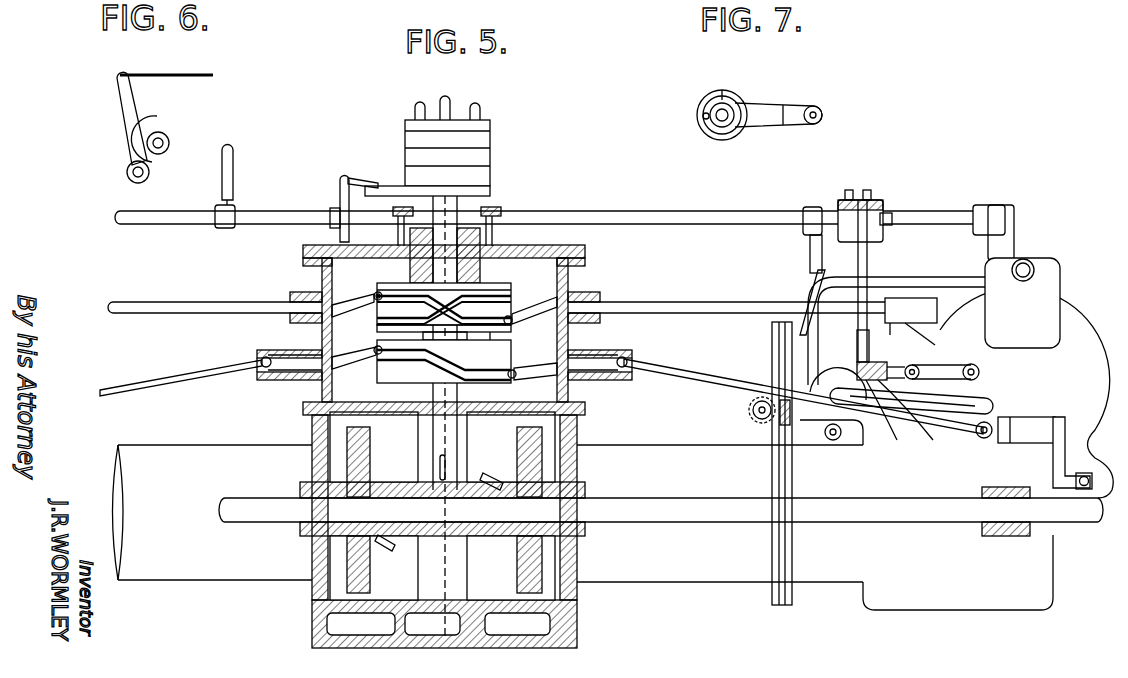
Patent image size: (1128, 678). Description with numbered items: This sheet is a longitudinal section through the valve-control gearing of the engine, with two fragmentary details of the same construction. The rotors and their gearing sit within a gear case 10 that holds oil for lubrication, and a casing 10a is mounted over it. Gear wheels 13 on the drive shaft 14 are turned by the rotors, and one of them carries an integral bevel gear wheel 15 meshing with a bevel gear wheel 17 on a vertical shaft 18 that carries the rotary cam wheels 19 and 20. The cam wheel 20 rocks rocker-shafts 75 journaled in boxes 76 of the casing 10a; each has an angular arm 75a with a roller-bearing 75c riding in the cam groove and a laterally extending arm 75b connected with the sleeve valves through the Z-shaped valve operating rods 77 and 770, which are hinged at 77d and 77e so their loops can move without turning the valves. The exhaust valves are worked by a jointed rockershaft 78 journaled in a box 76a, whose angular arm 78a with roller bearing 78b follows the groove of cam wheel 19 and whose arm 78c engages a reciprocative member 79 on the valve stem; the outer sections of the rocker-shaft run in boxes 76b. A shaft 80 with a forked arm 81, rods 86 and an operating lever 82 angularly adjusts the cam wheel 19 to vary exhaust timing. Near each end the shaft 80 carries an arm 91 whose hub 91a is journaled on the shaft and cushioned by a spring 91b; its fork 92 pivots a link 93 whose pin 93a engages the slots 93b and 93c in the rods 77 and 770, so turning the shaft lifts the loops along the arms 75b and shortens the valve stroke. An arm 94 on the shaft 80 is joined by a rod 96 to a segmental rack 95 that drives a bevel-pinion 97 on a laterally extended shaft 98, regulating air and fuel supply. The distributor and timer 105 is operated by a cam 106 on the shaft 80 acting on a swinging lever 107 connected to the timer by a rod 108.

In FIG. 5, the gear case 10 is at (562, 626).
In FIG. 5, the casing 10a is at (575, 263).
In FIG. 5, the gear wheels 13 is at (370, 570).
In FIG. 5, the drive shaft 14 is at (490, 213).
In FIG. 5, the bevel gear wheel 15 is at (394, 546).
In FIG. 5, the bevel gear wheel 17 is at (488, 477).
In FIG. 5, the vertical shaft 18 is at (447, 482).
In FIG. 5, the cam wheel 19 is at (512, 358).
In FIG. 5, the cam wheel 20 is at (504, 288).
In FIG. 5, the rocker-shafts 75 is at (218, 302).
In FIG. 5, the angular arm 75a is at (359, 300).
In FIG. 5, the laterally extending arm 75b is at (383, 290).
In FIG. 5, the roller-bearing 75c is at (493, 332).
In FIG. 5, the boxes 76 is at (300, 292).
In FIG. 5, the box 76a is at (300, 382).
In FIG. 5, the boxes 76b is at (1046, 422).
In FIG. 5, the valve operating rod 77 is at (893, 422).
In FIG. 5, the valve operating rod 770 is at (925, 422).
In FIG. 5, the hinge 77d is at (980, 371).
In FIG. 5, the pivot 77e is at (985, 379).
In FIG. 5, the rockershaft 78 is at (226, 374).
In FIG. 5, the angular arm 78a is at (352, 372).
In FIG. 5, the roller bearing 78b is at (374, 355).
In FIG. 5, the arm 78c is at (1053, 467).
In FIG. 5, the reciprocative member 79 is at (1082, 490).
In FIG. 6, the shaft 80 is at (170, 143).
In FIG. 7, the shaft 80 is at (736, 109).
In FIG. 5, the shaft 80 is at (638, 211).
In FIG. 5, the forked arm 81 is at (490, 196).
In FIG. 5, the operating lever 82 is at (236, 168).
In FIG. 5, the rods 86 is at (400, 233).
In FIG. 7, the laterally extending arm 91 is at (805, 107).
In FIG. 5, the laterally extending arm 91 is at (893, 218).
In FIG. 7, the hub 91a is at (738, 135).
In FIG. 7, the spring 91b is at (703, 118).
In FIG. 5, the fork 92 is at (872, 197).
In FIG. 5, the link 93 is at (868, 262).
In FIG. 5, the pin 93a is at (857, 366).
In FIG. 5, the slot 93b is at (857, 349).
In FIG. 5, the slot 93c is at (922, 368).
In FIG. 5, the arm 94 is at (808, 260).
In FIG. 5, the segmental rack 95 is at (782, 361).
In FIG. 5, the rod 96 is at (801, 293).
In FIG. 5, the bevel-pinion 97 is at (759, 421).
In FIG. 5, the laterally extended shaft 98 is at (752, 410).
In FIG. 5, the distributor and timer 105 is at (485, 137).
In FIG. 6, the cam 106 is at (154, 132).
In FIG. 5, the cam 106 is at (332, 211).
In FIG. 6, the swinging lever 107 is at (130, 142).
In FIG. 5, the swinging lever 107 is at (346, 174).
In FIG. 6, the rod 108 is at (196, 74).
In FIG. 5, the rod 108 is at (369, 176).